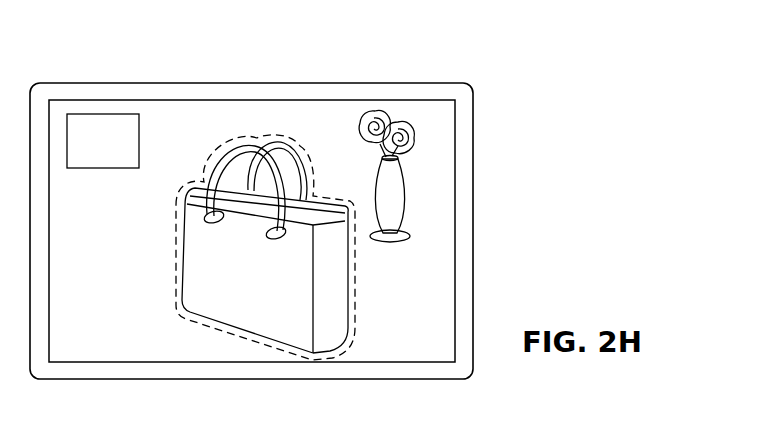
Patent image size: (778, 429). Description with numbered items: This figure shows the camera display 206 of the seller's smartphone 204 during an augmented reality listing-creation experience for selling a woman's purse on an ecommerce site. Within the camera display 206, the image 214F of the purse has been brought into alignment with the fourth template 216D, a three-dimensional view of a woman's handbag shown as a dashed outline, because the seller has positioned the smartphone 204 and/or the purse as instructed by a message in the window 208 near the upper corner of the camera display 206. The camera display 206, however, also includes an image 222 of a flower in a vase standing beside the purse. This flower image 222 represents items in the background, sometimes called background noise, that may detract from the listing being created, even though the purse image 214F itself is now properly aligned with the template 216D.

The smartphone 204 is at (408, 83).
The camera display 206 is at (455, 188).
The window 208 is at (105, 114).
The image 214F is at (196, 268).
The fourth template 216D is at (298, 153).
The image of a flower 222 is at (402, 214).